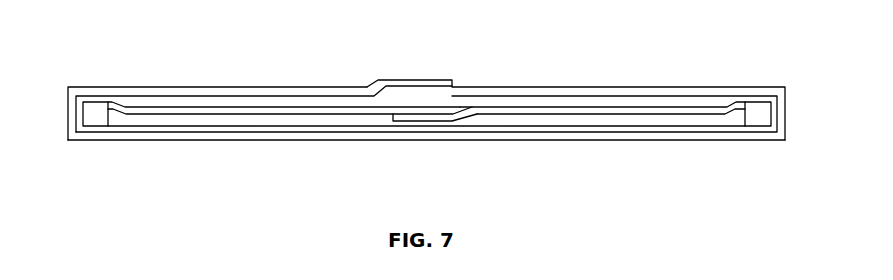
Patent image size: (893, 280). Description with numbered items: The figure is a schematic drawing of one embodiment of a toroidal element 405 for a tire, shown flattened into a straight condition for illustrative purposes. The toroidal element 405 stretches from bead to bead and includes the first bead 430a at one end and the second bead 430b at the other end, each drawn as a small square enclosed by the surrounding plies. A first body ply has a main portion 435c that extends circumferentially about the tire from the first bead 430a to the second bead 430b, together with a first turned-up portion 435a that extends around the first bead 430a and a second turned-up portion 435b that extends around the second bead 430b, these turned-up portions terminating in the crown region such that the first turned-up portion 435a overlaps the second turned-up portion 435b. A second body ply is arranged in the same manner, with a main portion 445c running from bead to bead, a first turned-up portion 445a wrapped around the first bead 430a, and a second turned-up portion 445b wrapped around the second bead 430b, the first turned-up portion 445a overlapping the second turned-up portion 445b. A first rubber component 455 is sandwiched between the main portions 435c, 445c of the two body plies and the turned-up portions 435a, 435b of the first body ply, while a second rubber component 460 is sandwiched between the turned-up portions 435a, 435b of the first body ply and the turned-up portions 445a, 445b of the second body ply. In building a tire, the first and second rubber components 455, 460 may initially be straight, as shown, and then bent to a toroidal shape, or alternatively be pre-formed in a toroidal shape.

The toroidal element 405 is at (717, 53).
The first bead 430a is at (753, 120).
The second bead 430b is at (90, 120).
The first turned-up portion 435a is at (480, 87).
The second turned-up portion 435b is at (243, 93).
The main portion 435c is at (490, 141).
The first turned-up portion 445a is at (548, 105).
The second turned-up portion 445b is at (305, 107).
The main portion 445c is at (278, 127).
The first rubber component 455 is at (383, 122).
The second rubber component 460 is at (636, 97).